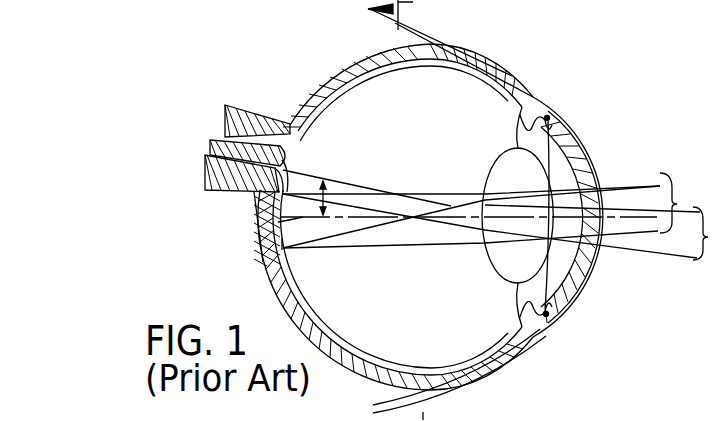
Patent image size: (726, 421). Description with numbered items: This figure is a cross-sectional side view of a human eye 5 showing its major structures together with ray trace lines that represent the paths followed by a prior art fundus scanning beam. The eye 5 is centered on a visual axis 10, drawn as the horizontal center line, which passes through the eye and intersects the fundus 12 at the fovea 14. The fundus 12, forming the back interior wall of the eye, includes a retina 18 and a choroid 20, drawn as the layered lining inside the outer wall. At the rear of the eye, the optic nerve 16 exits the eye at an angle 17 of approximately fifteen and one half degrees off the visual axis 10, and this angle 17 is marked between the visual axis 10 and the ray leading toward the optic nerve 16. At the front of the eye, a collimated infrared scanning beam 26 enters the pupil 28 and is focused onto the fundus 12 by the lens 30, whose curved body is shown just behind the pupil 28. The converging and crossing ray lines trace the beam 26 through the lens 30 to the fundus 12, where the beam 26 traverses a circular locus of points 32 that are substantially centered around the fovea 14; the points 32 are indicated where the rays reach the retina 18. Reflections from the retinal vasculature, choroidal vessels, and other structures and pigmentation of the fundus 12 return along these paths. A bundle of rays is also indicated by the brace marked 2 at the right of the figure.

The light ray bundle 2 is at (605, 232).
The eye 5 is at (578, 88).
The visual axis 10 is at (280, 240).
The fundus 12 is at (330, 320).
The fovea 14 is at (278, 215).
The optic nerve 16 is at (232, 138).
The angle 17 is at (350, 194).
The retina 18 is at (300, 297).
The choroid 20 is at (273, 291).
The IR scanning beam 26 is at (684, 203).
The pupil 28 is at (560, 193).
The lens 30 is at (503, 170).
The circular locus of points 32 is at (285, 193).